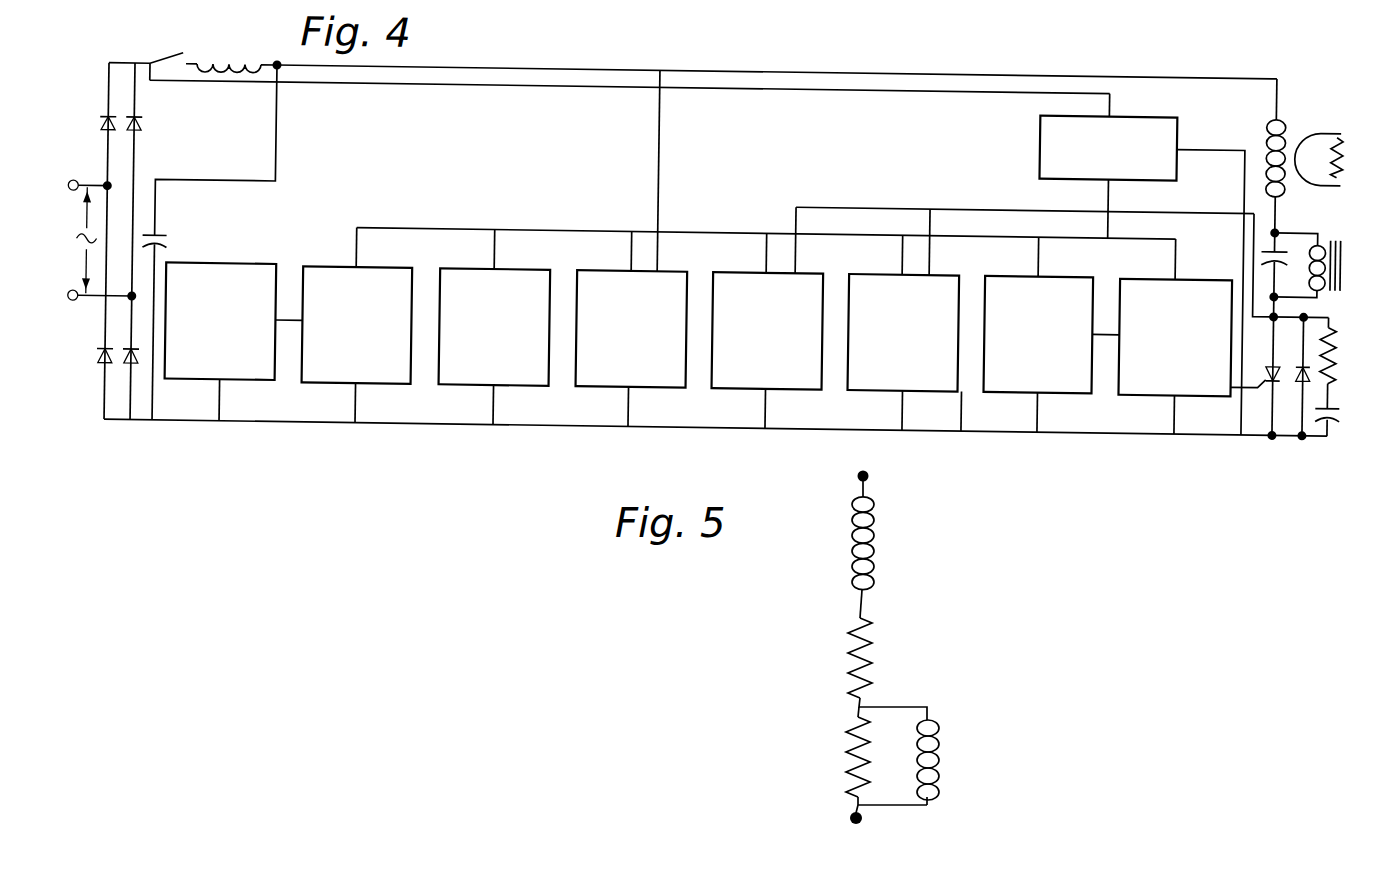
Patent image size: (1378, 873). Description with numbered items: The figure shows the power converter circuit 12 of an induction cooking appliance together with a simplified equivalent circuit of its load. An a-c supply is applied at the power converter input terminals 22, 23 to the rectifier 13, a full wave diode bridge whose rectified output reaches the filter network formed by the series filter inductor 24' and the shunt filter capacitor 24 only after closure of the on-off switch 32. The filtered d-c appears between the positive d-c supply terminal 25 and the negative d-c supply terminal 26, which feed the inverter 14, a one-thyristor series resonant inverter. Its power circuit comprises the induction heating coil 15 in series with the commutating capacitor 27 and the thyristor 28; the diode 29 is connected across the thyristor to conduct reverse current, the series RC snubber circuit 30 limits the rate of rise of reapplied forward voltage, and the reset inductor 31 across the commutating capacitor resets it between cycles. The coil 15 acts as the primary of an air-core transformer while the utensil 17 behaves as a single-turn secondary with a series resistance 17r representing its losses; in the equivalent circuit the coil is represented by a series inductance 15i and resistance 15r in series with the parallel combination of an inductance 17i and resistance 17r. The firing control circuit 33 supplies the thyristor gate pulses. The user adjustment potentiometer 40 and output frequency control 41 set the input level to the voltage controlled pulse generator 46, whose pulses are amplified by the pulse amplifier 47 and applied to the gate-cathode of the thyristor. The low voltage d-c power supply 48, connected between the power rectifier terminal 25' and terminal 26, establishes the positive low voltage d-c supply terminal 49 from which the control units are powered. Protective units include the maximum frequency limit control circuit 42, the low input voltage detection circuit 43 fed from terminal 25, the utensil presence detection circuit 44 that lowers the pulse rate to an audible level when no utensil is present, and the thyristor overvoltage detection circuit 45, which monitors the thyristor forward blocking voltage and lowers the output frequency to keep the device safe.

In FIG. 4, the power converter circuit 12 is at (96, 108).
In FIG. 4, the rectifier 13 is at (110, 240).
In FIG. 4, the inverter 14 is at (1218, 97).
In FIG. 4, the induction heating coil 15 is at (1269, 138).
In FIG. 5, the inductance 15i is at (874, 551).
In FIG. 5, the resistance 15r is at (867, 676).
In FIG. 4, the utensil 17 is at (1322, 160).
In FIG. 4, the series resistance 17r is at (1324, 122).
In FIG. 5, the series resistance 17r is at (857, 753).
In FIG. 5, the inductance 17i is at (939, 753).
In FIG. 4, the power converter input terminal 22 is at (76, 183).
In FIG. 4, the power converter input terminal 23 is at (80, 303).
In FIG. 4, the shunt filter capacitor 24 is at (208, 242).
In FIG. 4, the series filter inductor 24' is at (232, 47).
In FIG. 4, the positive d-c supply terminal 25 is at (774, 57).
In FIG. 4, the power rectifier terminal 25' is at (140, 42).
In FIG. 4, the negative d-c supply terminal 26 is at (525, 422).
In FIG. 4, the commutating capacitor 27 is at (1270, 238).
In FIG. 4, the thyristor 28 is at (1267, 363).
In FIG. 4, the diode 29 is at (1297, 356).
In FIG. 4, the series RC snubber circuit 30 is at (1333, 371).
In FIG. 4, the reset inductor 31 is at (1311, 243).
In FIG. 4, the on-off switch 32 is at (171, 52).
In FIG. 4, the firing control circuit 33 is at (764, 218).
In FIG. 4, the user adjustment potentiometer 40 is at (181, 380).
In FIG. 4, the output frequency control 41 is at (320, 382).
In FIG. 4, the maximum frequency limit control circuit 42 is at (457, 382).
In FIG. 4, the low input voltage detection circuit 43 is at (599, 382).
In FIG. 4, the utensil presence detection circuit 44 is at (737, 383).
In FIG. 4, the thyristor overvoltage detection circuit 45 is at (867, 382).
In FIG. 4, the voltage controlled pulse generator 46 is at (997, 382).
In FIG. 4, the pulse amplifier 47 is at (1141, 383).
In FIG. 4, the low voltage d-c power supply 48 is at (1048, 137).
In FIG. 4, the positive low voltage d-c supply terminal 49 is at (475, 224).